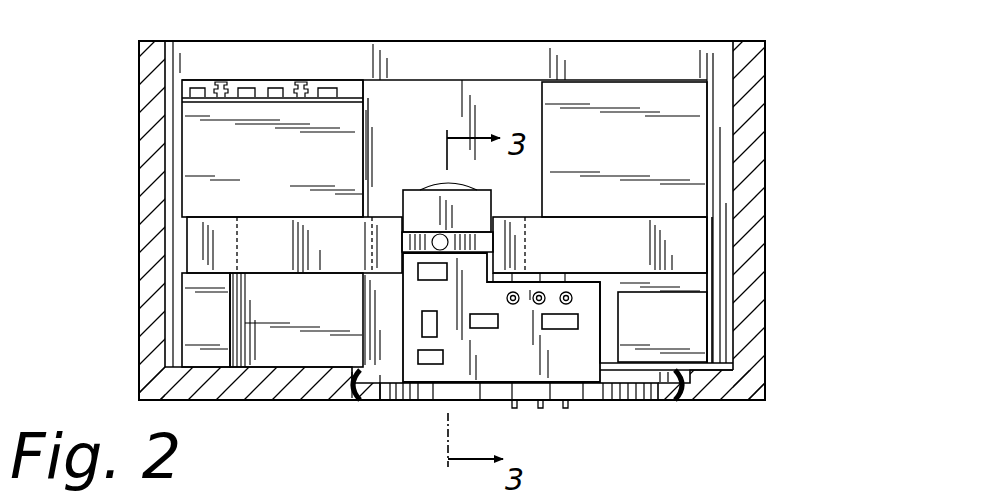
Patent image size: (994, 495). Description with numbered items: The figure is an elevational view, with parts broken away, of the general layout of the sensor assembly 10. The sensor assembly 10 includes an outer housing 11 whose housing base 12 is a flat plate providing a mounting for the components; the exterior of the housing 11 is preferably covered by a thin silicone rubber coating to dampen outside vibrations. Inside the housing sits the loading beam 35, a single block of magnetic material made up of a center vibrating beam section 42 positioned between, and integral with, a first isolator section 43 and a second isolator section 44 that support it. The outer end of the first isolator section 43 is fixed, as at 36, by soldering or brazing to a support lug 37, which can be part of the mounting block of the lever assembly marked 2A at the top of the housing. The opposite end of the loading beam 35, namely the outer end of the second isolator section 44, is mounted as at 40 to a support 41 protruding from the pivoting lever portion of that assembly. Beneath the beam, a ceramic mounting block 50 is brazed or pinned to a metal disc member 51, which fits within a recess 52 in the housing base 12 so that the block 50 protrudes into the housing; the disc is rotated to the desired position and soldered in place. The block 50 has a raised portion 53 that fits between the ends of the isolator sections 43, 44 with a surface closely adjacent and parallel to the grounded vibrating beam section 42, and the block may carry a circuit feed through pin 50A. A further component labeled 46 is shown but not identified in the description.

The sensor assembly 10 is at (786, 238).
The outer housing 11 is at (766, 172).
The housing base 12 is at (238, 392).
The top portion of housing 2A is at (632, 78).
The loading beam 35 is at (289, 215).
The mounting of isolator section outer end 36 is at (213, 269).
The support lug 37 is at (220, 338).
The mounting of second isolator section 40 is at (681, 282).
The support 41 is at (704, 312).
The center vibrating beam section 42 is at (422, 240).
The first isolator section 43 is at (338, 258).
The second isolator section 44 is at (630, 262).
The control unit 46 is at (575, 97).
The ceramic mounting block 50 is at (418, 292).
The circuit feed through pin 50A is at (568, 408).
The disc member 51 is at (629, 404).
The recess 52 is at (388, 404).
The raised portion 53 is at (474, 202).